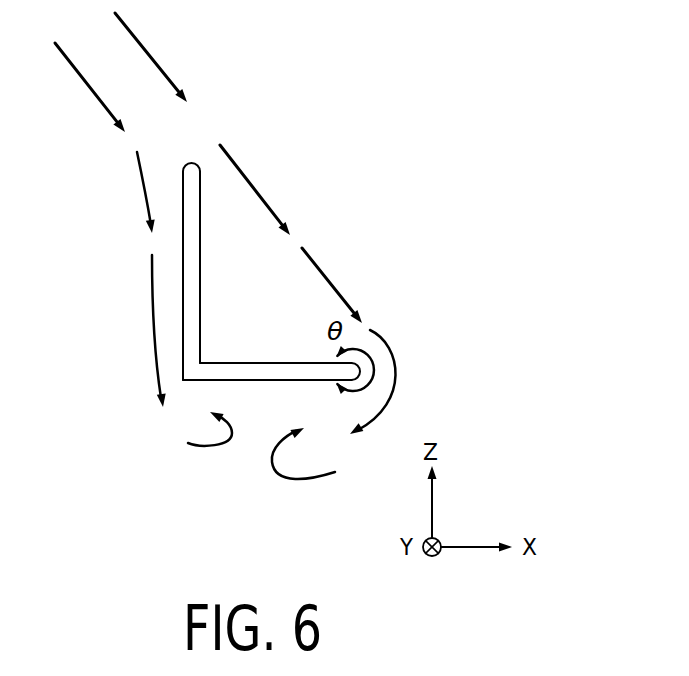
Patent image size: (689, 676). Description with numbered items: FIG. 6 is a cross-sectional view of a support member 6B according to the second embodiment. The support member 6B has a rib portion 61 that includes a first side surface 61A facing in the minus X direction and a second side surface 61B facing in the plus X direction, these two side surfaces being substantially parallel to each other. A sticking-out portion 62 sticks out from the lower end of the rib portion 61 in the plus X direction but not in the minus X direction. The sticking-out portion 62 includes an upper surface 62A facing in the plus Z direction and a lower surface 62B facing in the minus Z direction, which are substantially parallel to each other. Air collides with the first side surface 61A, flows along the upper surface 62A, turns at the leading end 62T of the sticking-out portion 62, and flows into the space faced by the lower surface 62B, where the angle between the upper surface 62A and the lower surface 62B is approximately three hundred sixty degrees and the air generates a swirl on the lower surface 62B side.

The support member 6B is at (371, 154).
The rib portion 61 is at (200, 262).
The first side surface 61A is at (183, 205).
The second side surface 61B is at (200, 203).
The sticking-out portion 62 is at (302, 363).
The upper surface 62A is at (238, 363).
The lower surface 62B is at (255, 381).
The leading end 62T is at (360, 371).